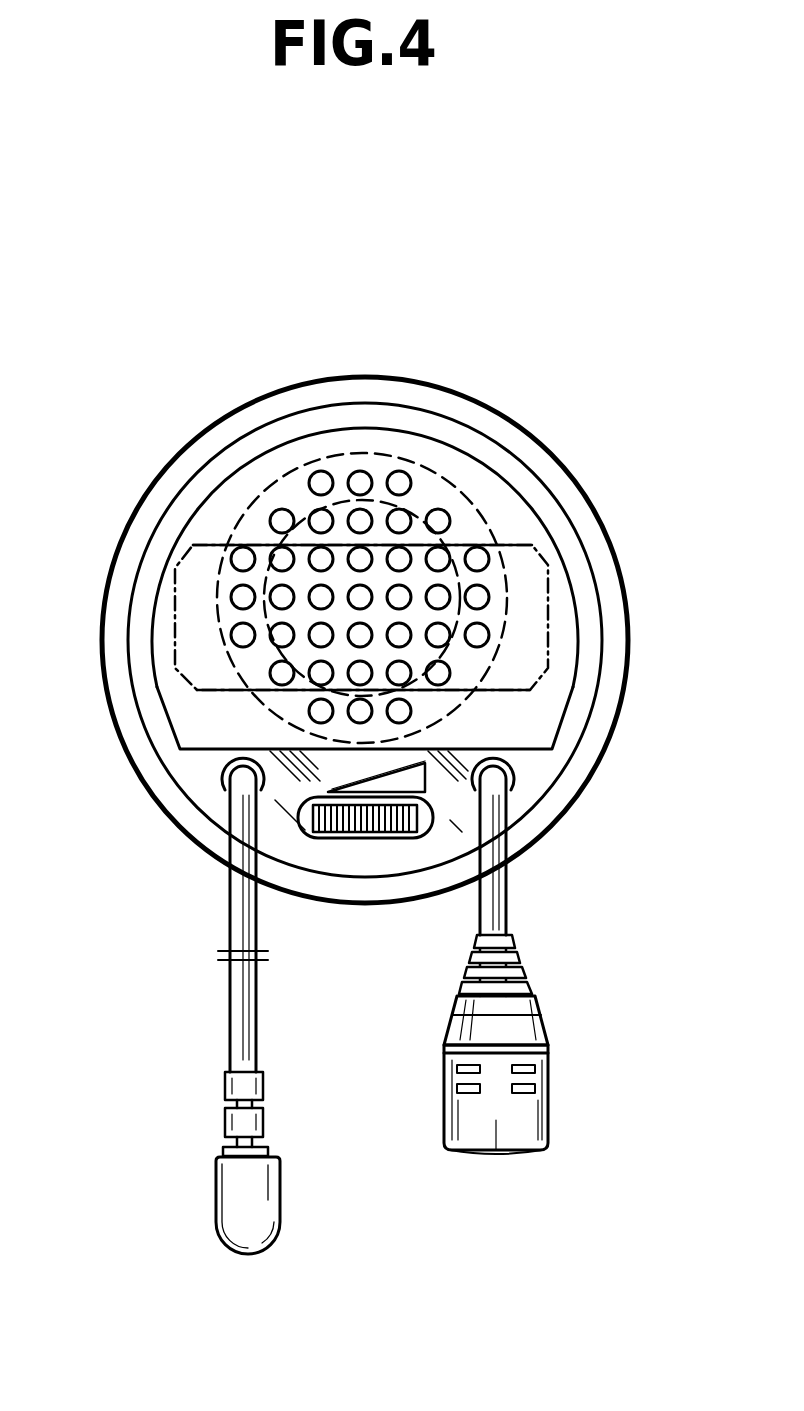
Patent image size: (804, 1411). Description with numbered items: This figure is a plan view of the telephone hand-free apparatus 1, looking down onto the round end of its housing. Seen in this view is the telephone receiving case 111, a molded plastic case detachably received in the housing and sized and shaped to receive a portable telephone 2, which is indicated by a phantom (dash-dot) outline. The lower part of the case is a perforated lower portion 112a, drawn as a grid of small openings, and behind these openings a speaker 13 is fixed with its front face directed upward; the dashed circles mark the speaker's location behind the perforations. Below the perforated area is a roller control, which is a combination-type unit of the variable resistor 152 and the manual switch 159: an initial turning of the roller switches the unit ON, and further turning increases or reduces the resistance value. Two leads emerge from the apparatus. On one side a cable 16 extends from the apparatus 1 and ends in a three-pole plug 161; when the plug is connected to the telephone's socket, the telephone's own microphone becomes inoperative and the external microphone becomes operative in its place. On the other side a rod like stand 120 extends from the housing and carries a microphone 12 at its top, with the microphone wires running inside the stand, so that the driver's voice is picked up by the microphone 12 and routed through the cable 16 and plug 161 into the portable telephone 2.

The telephone hand-free apparatus 1 is at (613, 331).
The telephone receiving case 111 is at (213, 517).
The portable telephone 2 is at (187, 678).
The speaker 13 is at (427, 490).
The perforated lower portion 112a is at (357, 474).
The variable resistor 152 is at (360, 885).
The manual switch 159 is at (370, 927).
The cable 16 is at (232, 1016).
The 3P-plug 161 is at (260, 1208).
The rod like stand 120 is at (500, 905).
The microphone 12 is at (536, 1113).